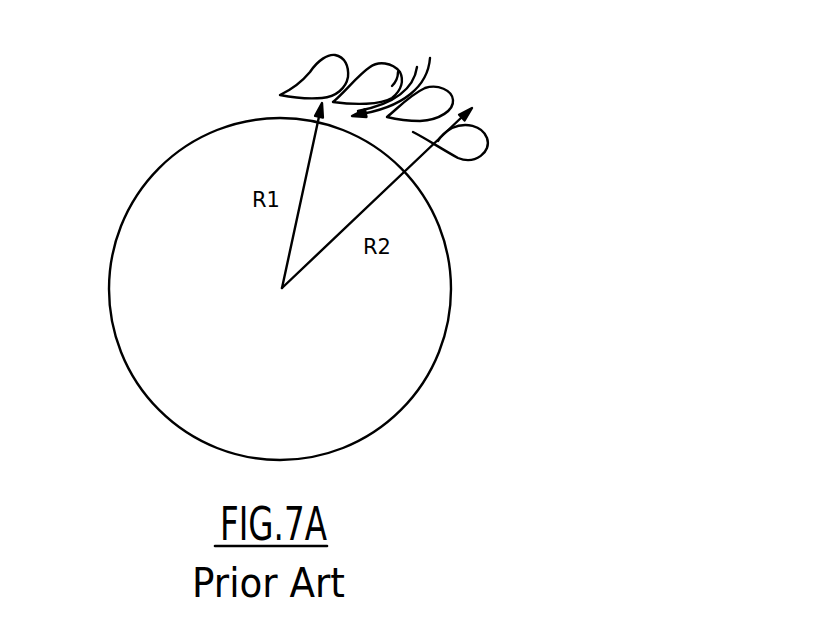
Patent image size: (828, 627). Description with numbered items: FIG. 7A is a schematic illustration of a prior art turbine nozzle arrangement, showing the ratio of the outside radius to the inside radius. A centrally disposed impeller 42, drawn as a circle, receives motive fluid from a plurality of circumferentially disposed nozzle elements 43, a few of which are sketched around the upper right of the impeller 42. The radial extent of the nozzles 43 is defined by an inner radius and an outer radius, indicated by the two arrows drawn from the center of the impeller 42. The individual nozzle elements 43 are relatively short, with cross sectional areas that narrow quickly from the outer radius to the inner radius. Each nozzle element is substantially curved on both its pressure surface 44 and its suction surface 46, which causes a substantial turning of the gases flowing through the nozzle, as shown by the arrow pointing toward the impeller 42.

The impeller 42 is at (110, 320).
The nozzle elements 43 is at (446, 100).
The pressure surface 44 is at (360, 87).
The suction surface 46 is at (397, 73).